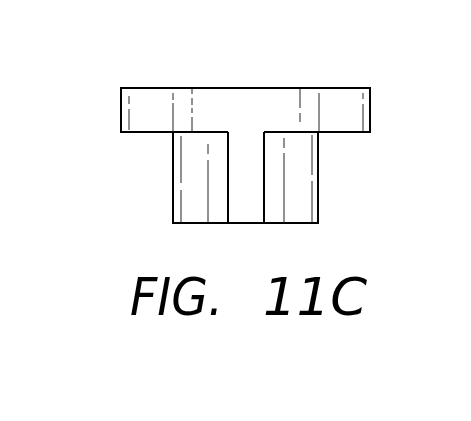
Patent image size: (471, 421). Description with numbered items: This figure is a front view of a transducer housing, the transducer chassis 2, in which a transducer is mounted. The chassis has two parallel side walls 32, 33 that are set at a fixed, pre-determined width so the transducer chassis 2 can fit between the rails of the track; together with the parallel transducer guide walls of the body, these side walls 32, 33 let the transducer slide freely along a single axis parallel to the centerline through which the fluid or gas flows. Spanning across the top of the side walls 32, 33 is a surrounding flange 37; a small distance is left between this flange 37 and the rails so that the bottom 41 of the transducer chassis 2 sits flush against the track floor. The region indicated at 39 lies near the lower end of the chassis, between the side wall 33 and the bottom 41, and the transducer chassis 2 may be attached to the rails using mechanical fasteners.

The transducer chassis 2 is at (232, 139).
The surrounding flange 37 is at (121, 110).
The side wall 33 is at (173, 172).
The side wall 32 is at (318, 165).
The bottom surface region 39 is at (143, 211).
The bottom 41 is at (287, 237).